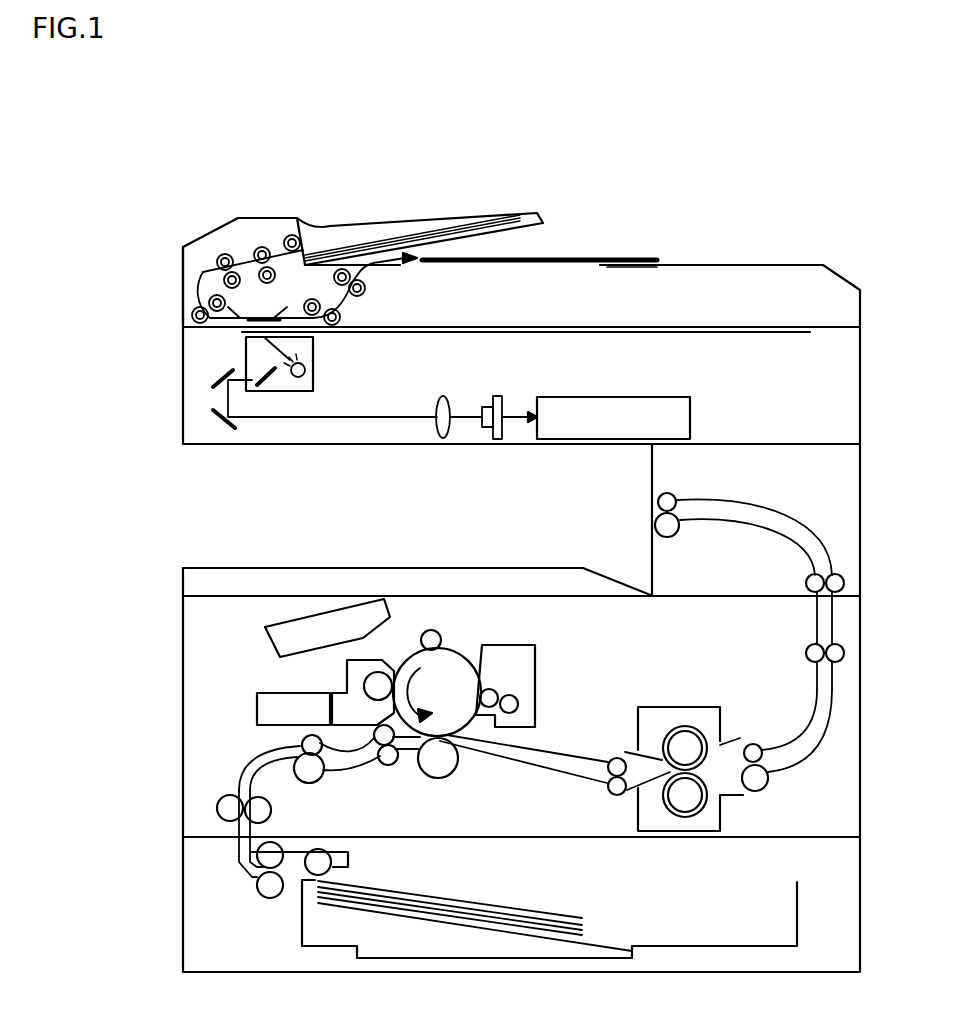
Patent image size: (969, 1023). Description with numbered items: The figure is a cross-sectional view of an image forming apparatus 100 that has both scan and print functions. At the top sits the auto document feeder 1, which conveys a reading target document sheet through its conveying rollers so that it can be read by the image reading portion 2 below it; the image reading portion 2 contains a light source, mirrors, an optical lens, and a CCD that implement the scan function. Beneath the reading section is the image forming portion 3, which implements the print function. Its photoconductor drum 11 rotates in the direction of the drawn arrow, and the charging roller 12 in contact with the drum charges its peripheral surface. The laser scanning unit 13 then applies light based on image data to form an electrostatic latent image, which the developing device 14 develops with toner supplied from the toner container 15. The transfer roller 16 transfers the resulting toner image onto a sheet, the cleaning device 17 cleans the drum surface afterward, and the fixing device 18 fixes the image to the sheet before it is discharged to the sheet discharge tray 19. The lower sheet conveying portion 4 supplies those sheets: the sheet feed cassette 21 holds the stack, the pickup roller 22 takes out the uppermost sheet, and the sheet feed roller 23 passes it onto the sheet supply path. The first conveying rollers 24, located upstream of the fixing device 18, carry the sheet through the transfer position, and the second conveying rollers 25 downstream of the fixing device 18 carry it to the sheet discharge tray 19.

The image forming apparatus 100 is at (172, 165).
The auto document feeder 1 is at (183, 268).
The image reading portion 2 is at (183, 385).
The image forming portion 3 is at (204, 623).
The sheet conveying portion 4 is at (183, 905).
The photoconductor drum 11 is at (463, 655).
The charging roller 12 is at (432, 630).
The laser scanning unit 13 is at (267, 651).
The developing device 14 is at (347, 662).
The toner container 15 is at (257, 717).
The transfer roller 16 is at (437, 778).
The cleaning device 17 is at (510, 645).
The fixing device 18 is at (650, 707).
The sheet discharge tray 19 is at (545, 567).
The sheet feed cassette 21 is at (302, 915).
The pickup roller 22 is at (332, 870).
The sheet feed roller 23 is at (258, 862).
The first conveying rollers 24 is at (268, 812).
The second conveying rollers 25 is at (675, 540).